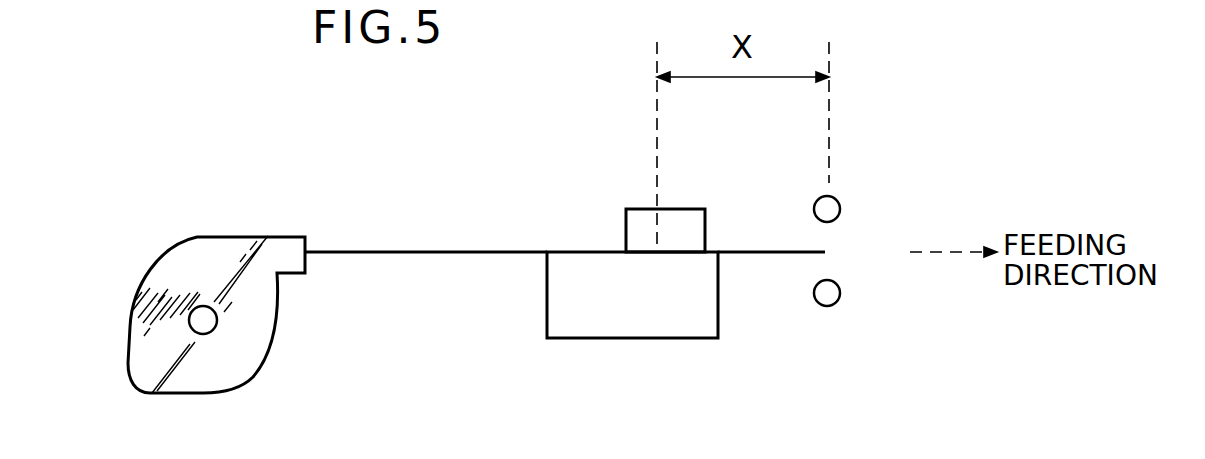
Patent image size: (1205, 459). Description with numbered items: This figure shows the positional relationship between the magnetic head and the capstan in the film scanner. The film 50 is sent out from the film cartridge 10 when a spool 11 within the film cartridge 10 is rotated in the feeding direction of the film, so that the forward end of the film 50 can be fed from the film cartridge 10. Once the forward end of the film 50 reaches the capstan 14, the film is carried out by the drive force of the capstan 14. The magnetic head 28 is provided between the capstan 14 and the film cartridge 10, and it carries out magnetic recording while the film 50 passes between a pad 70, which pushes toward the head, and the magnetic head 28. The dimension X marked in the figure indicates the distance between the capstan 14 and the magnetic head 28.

The film cartridge 10 is at (237, 250).
The spool 11 is at (202, 327).
The film 50 is at (382, 250).
The magnetic head 28 is at (718, 318).
The pad 70 is at (705, 220).
The capstan 14 is at (840, 220).